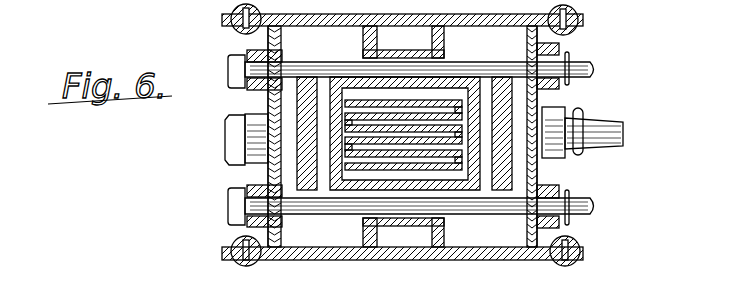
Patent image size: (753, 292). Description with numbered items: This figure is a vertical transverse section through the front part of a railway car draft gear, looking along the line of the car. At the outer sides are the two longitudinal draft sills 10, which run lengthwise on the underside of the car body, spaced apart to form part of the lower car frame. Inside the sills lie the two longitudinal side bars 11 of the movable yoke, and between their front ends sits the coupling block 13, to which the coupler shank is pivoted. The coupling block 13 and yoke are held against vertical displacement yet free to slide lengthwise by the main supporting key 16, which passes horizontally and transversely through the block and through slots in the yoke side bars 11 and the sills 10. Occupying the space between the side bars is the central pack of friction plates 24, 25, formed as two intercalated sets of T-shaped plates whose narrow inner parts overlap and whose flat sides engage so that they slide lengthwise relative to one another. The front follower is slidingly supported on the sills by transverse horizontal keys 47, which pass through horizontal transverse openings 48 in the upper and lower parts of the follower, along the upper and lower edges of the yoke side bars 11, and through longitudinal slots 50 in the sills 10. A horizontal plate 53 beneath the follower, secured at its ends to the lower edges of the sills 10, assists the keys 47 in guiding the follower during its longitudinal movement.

The longitudinal draft sills 10 is at (282, 40).
The yoke side bars 11 is at (270, 110).
The coupling block 13 is at (444, 46).
The main supporting key 16 is at (623, 135).
The friction plates 24 is at (344, 130).
The friction plates 25 is at (478, 128).
The transverse horizontal keys 47 is at (598, 69).
The horizontal transverse openings 48 is at (432, 219).
The longitudinal slots 50 is at (248, 56).
The horizontal plate 53 is at (518, 249).